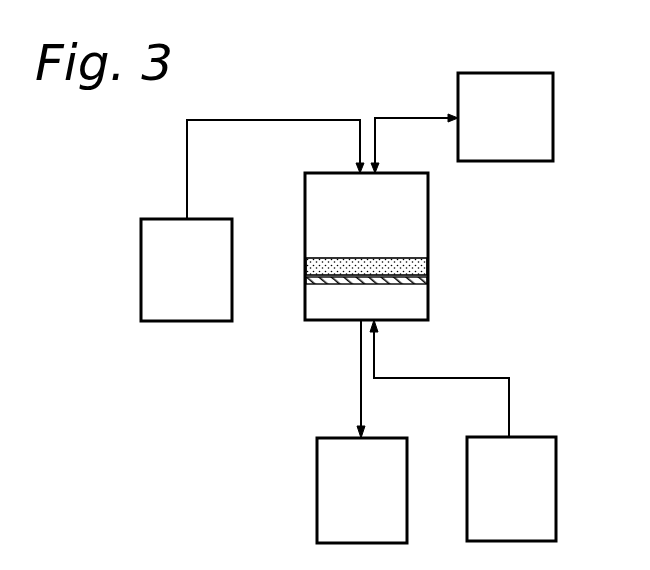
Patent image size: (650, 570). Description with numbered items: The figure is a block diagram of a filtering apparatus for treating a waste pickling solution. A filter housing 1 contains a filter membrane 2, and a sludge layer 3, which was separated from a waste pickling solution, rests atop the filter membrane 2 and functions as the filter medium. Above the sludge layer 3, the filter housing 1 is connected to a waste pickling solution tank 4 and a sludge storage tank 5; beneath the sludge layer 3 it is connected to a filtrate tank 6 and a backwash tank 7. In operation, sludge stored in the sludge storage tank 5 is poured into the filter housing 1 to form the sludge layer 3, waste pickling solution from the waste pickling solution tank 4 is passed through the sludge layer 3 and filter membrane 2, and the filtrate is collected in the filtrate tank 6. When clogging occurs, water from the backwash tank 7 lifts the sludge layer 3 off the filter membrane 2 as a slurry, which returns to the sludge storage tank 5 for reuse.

The filter housing 1 is at (428, 206).
The filter membrane 2 is at (428, 282).
The sludge layer 3 is at (428, 265).
The waste pickling solution tank 4 is at (174, 322).
The sludge storage tank 5 is at (553, 112).
The filtrate tank 6 is at (384, 434).
The backwash tank 7 is at (548, 437).